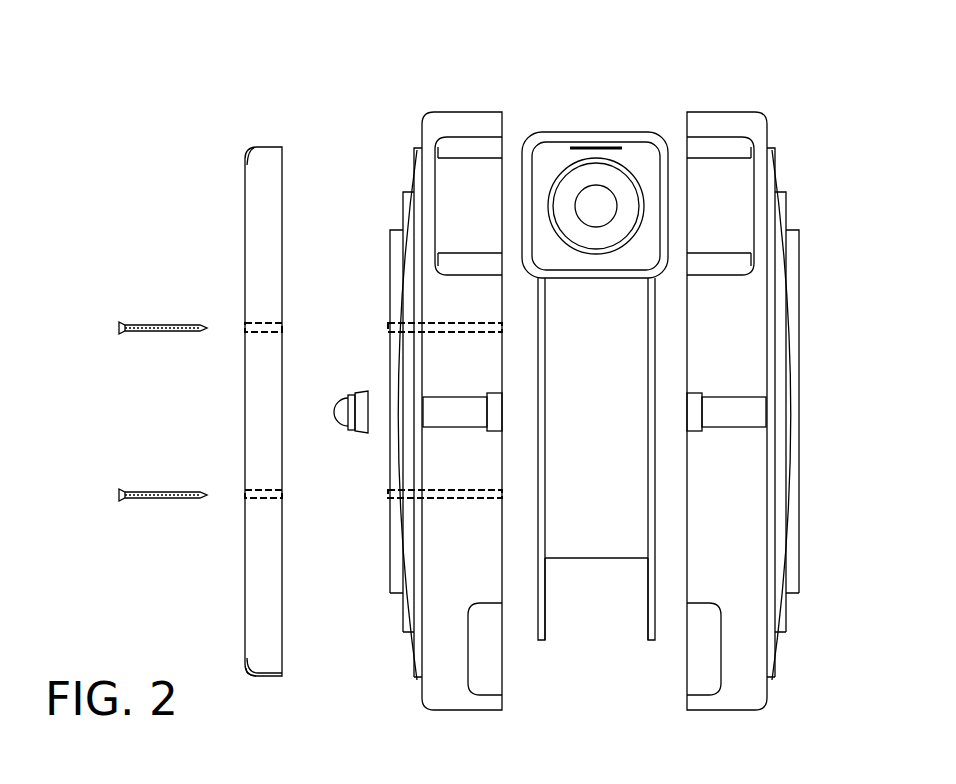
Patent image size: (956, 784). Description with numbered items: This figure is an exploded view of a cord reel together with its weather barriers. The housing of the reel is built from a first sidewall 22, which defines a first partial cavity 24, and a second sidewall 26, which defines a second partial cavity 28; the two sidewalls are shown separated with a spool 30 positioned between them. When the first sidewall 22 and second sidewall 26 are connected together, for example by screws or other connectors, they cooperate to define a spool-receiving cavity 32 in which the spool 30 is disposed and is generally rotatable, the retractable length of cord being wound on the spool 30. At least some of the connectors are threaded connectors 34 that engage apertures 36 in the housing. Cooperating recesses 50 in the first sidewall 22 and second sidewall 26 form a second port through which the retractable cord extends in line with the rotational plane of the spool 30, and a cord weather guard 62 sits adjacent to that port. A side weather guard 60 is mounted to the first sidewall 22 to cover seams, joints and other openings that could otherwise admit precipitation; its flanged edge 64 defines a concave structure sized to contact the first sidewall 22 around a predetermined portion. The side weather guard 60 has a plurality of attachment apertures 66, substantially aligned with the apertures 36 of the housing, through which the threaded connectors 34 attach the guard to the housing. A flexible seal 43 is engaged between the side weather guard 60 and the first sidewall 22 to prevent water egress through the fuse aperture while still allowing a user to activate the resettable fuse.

The first sidewall 22 is at (472, 124).
The first partial cavity 24 is at (520, 320).
The second sidewall 26 is at (724, 124).
The second partial cavity 28 is at (673, 347).
The spool 30 is at (603, 540).
The spool-receiving cavity 32 is at (615, 622).
The threaded connectors 34 is at (118, 328).
The apertures 36 is at (392, 324).
The flexible seal 43 is at (355, 390).
The cooperating recesses 50 is at (470, 197).
The side weather guard 60 is at (258, 148).
The cord weather guard 62 is at (578, 130).
The flanged edge 64 is at (283, 677).
The attachment apertures 66 is at (245, 323).